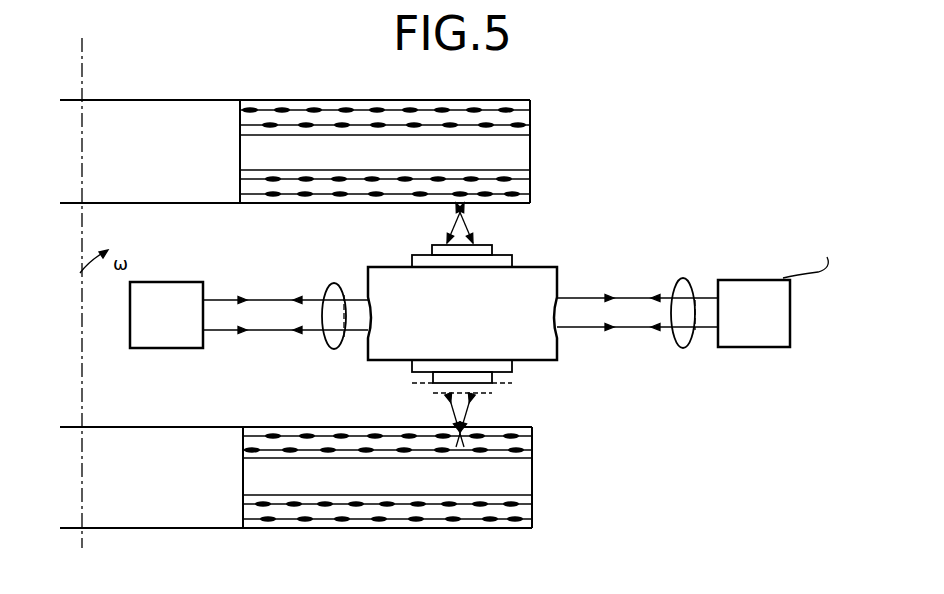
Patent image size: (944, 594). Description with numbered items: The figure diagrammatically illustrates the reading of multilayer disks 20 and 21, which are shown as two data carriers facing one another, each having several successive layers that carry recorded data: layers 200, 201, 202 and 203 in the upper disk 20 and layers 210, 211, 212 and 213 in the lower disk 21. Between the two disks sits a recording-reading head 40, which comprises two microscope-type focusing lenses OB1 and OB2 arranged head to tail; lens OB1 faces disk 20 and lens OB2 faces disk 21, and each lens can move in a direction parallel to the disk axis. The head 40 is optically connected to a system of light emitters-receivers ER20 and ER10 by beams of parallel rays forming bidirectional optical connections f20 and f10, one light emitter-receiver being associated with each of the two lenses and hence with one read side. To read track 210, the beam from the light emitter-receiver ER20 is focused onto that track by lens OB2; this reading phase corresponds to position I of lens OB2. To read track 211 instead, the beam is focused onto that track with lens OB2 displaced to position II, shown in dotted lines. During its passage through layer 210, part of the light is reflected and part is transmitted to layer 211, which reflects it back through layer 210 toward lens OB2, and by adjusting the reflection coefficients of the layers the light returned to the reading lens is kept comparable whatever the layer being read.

The multilayer disk 20 is at (137, 107).
The multilayer disk 21 is at (140, 523).
The data layer 200 is at (532, 108).
The data layer 201 is at (532, 126).
The data layer 202 is at (532, 182).
The data layer 203 is at (532, 199).
The track 210 is at (534, 428).
The track 211 is at (534, 448).
The data layer 212 is at (534, 504).
The data layer 213 is at (534, 520).
The recording-reading head 40 is at (557, 270).
The focusing lens OB1 is at (445, 235).
The focusing lens OB2 is at (440, 388).
The position I of lens OB2 I is at (515, 370).
The position II of lens OB2 II is at (498, 387).
The bidirectional optical connection f20 is at (327, 352).
The bidirectional optical connection f10 is at (677, 343).
The light emitter-receiver ER20 is at (133, 351).
The light emitter-receiver ER10 is at (732, 350).